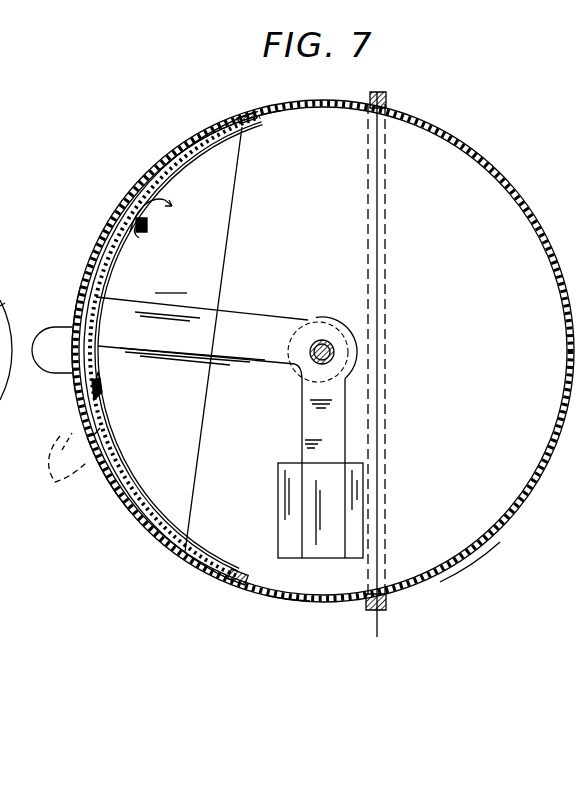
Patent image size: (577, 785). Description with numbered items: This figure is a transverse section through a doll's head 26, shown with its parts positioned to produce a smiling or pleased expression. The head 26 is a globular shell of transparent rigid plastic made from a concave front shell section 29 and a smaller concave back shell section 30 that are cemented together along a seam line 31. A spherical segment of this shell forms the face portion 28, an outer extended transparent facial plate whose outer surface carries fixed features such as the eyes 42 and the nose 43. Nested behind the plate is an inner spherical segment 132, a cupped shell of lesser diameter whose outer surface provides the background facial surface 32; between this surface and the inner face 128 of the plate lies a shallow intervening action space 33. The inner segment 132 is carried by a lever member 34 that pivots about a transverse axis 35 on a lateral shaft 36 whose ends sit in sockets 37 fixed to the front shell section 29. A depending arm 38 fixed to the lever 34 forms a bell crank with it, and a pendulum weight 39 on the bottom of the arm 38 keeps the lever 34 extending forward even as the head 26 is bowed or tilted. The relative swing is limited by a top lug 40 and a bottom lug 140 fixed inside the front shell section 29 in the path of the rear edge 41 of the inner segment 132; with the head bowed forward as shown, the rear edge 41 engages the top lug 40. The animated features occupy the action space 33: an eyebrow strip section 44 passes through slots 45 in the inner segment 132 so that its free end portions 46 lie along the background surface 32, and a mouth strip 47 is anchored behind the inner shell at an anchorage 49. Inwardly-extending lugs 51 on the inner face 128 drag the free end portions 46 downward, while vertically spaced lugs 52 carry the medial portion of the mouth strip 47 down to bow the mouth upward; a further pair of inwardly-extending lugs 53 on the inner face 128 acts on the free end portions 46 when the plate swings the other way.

The head 26 is at (503, 167).
The face portion 28 is at (102, 488).
The concave front shell section 29 is at (287, 602).
The concave back shell section 30 is at (461, 574).
The seam line 31 is at (372, 377).
The background facial surface 32 is at (80, 387).
The intervening action space 33 is at (155, 173).
The lever member 34 is at (226, 317).
The transverse axis 35 is at (338, 354).
The lateral shaft 36 is at (331, 343).
The sockets 37 is at (318, 321).
The depending arm 38 is at (332, 443).
The pendulum weight 39 is at (346, 507).
The top lug 40 is at (252, 134).
The rear edge 41 is at (234, 188).
The eyes 42 is at (80, 293).
The nose 43 is at (62, 324).
The eyebrow strip section 44 is at (141, 230).
The slots 45 is at (113, 404).
The free end portions 46 is at (110, 232).
The mouth strip 47 is at (93, 436).
The anchorage 49 is at (101, 388).
The inwardly-extending lugs 51 is at (126, 218).
The vertically spaced lugs 52 is at (53, 459).
The inwardly-extending lugs 53 is at (103, 255).
The inner face 128 is at (96, 282).
The inner spherical segment 132 is at (170, 283).
The bottom lug 140 is at (238, 573).